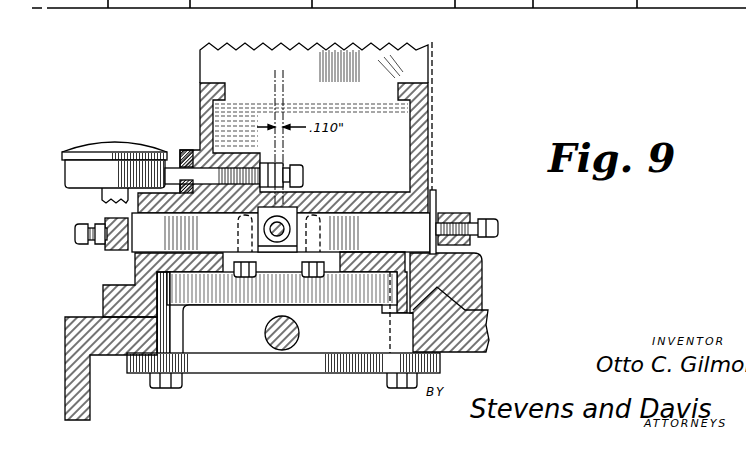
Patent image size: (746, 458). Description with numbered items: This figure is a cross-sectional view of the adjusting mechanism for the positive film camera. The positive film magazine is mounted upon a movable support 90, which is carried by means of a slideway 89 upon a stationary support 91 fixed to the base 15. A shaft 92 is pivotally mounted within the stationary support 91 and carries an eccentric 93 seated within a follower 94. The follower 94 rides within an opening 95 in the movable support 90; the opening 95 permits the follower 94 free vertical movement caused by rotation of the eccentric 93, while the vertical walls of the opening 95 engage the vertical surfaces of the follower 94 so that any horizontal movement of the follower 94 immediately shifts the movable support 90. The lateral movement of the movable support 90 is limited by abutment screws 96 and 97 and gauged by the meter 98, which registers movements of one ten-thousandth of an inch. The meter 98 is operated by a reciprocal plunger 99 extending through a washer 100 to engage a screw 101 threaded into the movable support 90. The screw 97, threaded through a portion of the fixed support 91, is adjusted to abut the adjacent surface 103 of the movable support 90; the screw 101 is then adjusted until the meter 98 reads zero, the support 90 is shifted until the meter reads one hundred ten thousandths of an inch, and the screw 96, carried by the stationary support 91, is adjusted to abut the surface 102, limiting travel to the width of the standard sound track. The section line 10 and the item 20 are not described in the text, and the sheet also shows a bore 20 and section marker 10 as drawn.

The section line 10- 10 is at (277, 42).
The base 15 is at (68, 318).
The bore 20 is at (288, 348).
The slideway 89 is at (403, 238).
The movable support 90 is at (421, 147).
The stationary support 91 is at (472, 268).
The shaft 92 is at (297, 230).
The eccentric 93 is at (270, 243).
The follower 94 is at (300, 213).
The opening 95 is at (293, 248).
The screw 96 is at (76, 232).
The screw 97 is at (490, 222).
The meter 98 is at (70, 152).
The reciprocal plunger 99 is at (178, 160).
The washer 100 is at (189, 150).
The screw 101 is at (291, 166).
The surface 102 is at (125, 252).
The adjacent surface 103 is at (433, 200).